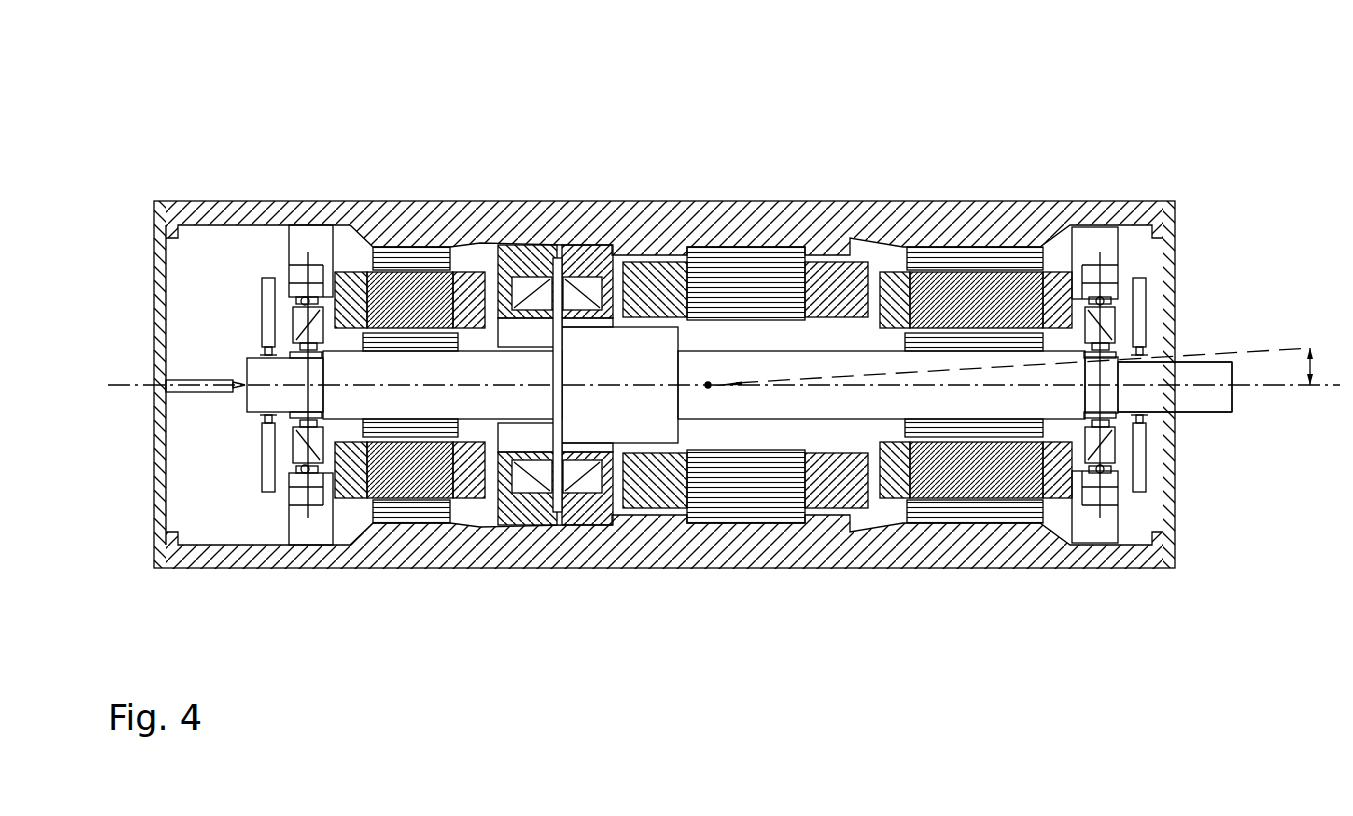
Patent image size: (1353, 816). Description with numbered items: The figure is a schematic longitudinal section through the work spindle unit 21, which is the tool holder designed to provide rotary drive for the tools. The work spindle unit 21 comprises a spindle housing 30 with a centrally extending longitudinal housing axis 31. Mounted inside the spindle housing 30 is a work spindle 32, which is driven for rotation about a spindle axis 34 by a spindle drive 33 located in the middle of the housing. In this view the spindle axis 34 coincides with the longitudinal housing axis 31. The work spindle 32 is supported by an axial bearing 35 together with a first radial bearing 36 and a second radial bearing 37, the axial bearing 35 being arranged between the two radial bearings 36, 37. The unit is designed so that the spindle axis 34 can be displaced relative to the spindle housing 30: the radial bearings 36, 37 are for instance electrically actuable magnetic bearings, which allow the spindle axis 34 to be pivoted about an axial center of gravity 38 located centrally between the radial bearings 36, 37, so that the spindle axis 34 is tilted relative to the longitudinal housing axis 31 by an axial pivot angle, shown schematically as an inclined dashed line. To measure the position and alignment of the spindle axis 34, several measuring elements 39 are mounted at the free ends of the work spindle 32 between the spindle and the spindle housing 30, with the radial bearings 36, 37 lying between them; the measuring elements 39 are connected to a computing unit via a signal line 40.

The work spindle unit 21 is at (528, 170).
The spindle housing 30 is at (452, 205).
The longitudinal housing axis 31 is at (118, 392).
The work spindle 32 is at (845, 360).
The spindle drive 33 is at (720, 255).
The spindle axis 34 is at (1197, 415).
The axial bearing 35 is at (598, 242).
The first radial bearing 36 is at (975, 275).
The second radial bearing 37 is at (382, 272).
The axial center of gravity 38 is at (747, 390).
The measuring elements 39 is at (308, 205).
The signal line 40 is at (236, 201).